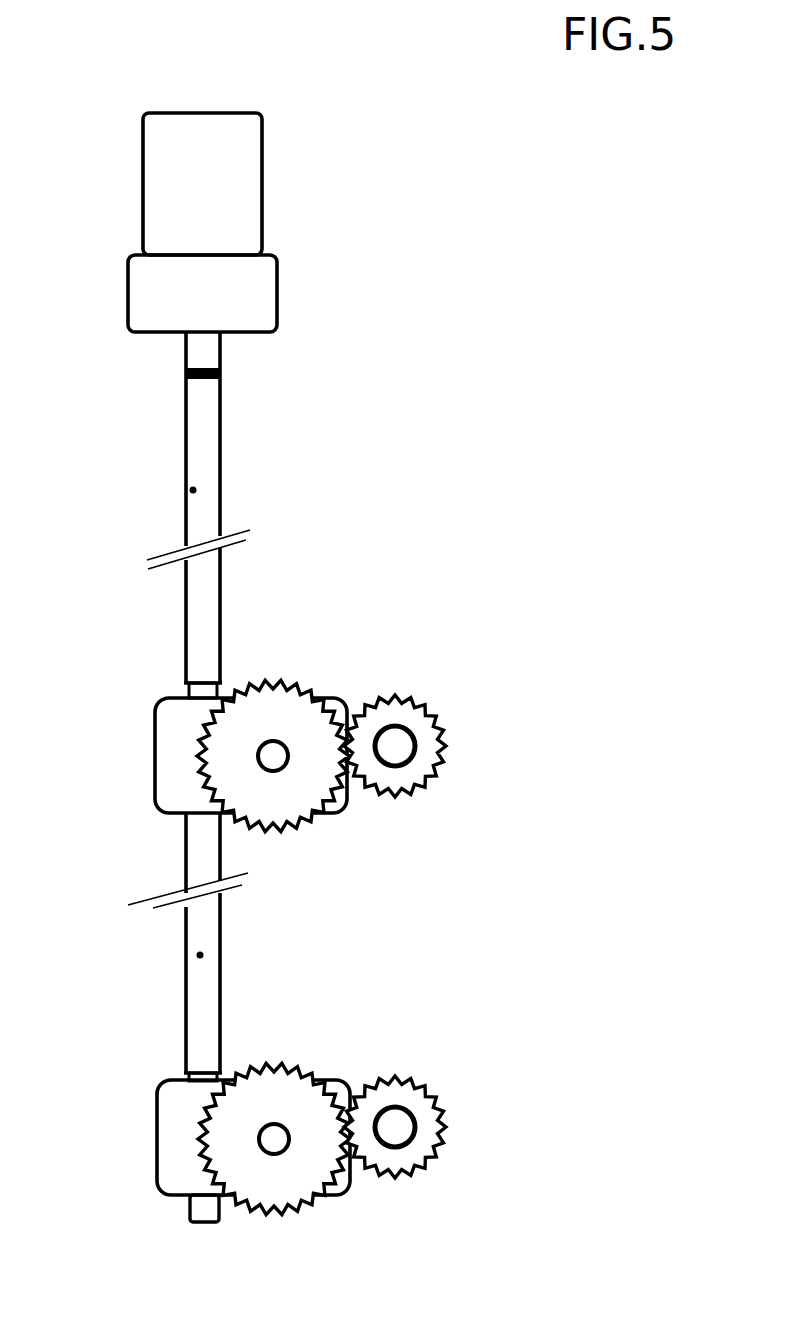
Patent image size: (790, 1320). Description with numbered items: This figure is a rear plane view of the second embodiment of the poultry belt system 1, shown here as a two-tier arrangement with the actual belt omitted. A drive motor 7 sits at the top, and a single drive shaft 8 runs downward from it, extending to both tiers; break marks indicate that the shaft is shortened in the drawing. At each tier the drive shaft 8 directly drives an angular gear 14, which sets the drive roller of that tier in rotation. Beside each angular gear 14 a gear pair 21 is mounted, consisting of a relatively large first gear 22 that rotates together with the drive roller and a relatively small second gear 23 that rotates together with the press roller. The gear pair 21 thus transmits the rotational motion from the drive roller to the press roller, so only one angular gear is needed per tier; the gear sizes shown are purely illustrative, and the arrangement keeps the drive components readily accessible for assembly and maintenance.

The drive device 1 is at (498, 352).
The drive motor 7 is at (177, 220).
The drive shaft 8 is at (203, 462).
The angular gear 14 is at (188, 758).
The gear pair 21 is at (364, 628).
The first gear 22 is at (278, 725).
The second gear 23 is at (415, 725).